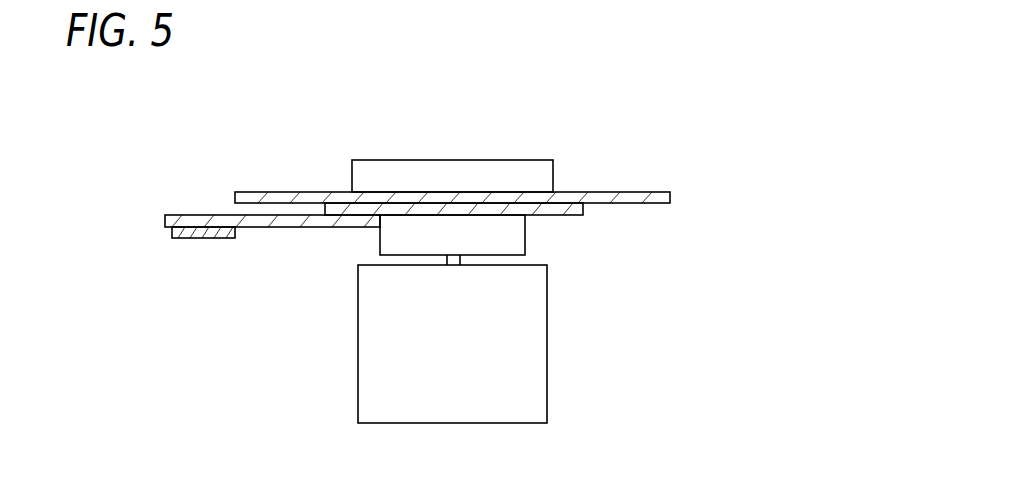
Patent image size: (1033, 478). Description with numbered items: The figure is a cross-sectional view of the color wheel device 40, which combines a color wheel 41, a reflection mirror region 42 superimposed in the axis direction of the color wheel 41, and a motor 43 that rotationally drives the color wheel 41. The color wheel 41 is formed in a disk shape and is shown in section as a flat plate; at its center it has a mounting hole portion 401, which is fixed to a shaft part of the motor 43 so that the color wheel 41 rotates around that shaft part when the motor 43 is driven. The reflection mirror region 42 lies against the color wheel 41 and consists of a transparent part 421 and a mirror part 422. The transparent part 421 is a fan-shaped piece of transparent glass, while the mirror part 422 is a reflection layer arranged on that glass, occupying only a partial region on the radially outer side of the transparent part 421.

The color wheel device 40 is at (677, 147).
The mounting hole portion 401 is at (462, 168).
The color wheel 41 is at (287, 182).
The reflection mirror region 42 is at (325, 208).
The transparent part 421 is at (163, 225).
The mirror part 422 is at (172, 233).
The motor 43 is at (547, 365).